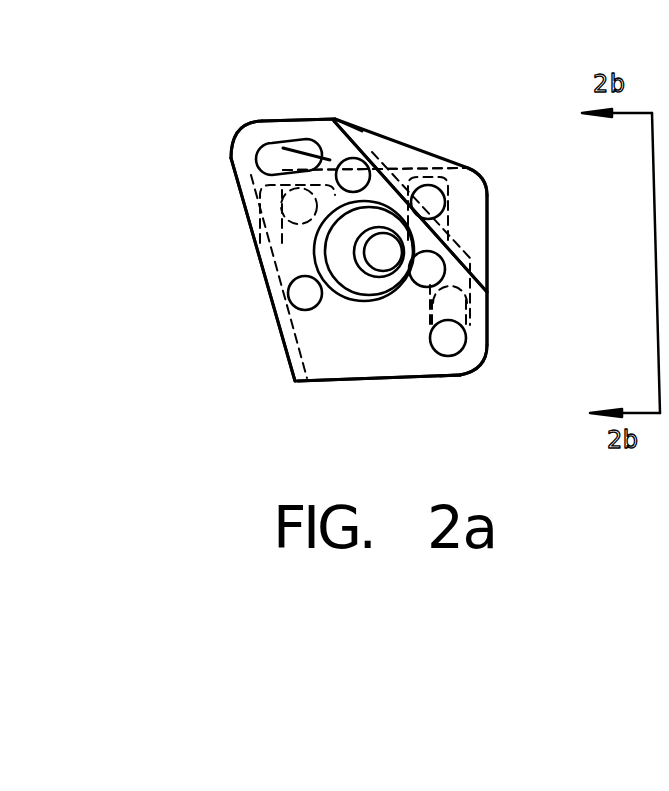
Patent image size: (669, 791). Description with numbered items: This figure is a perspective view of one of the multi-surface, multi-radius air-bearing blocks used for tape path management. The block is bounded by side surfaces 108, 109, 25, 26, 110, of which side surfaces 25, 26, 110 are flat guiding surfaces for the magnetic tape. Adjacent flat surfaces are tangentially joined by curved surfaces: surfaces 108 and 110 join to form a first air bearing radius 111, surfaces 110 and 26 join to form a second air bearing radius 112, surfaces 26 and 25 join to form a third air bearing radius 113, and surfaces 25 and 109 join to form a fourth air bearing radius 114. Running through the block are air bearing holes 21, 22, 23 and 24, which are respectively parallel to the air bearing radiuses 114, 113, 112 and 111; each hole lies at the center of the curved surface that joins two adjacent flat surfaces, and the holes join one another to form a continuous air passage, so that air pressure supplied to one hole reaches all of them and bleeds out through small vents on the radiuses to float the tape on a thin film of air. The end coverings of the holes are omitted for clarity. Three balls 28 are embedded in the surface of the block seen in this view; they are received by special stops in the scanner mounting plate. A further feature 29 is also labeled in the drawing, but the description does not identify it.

The air bearing hole 21 is at (482, 356).
The air bearing hole 22 is at (468, 246).
The air bearing hole 23 is at (352, 126).
The air bearing hole 24 is at (260, 160).
The side surface 25 is at (488, 328).
The side surface 26 is at (483, 173).
The balls 28 is at (290, 296).
The boss 29 is at (312, 243).
The side surface 108 is at (278, 337).
The side surface 109 is at (393, 380).
The side surface 110 is at (292, 118).
The first air bearing radius 111 is at (236, 125).
The second air bearing radius 112 is at (328, 118).
The third air bearing radius 113 is at (489, 283).
The fourth air bearing radius 114 is at (477, 372).